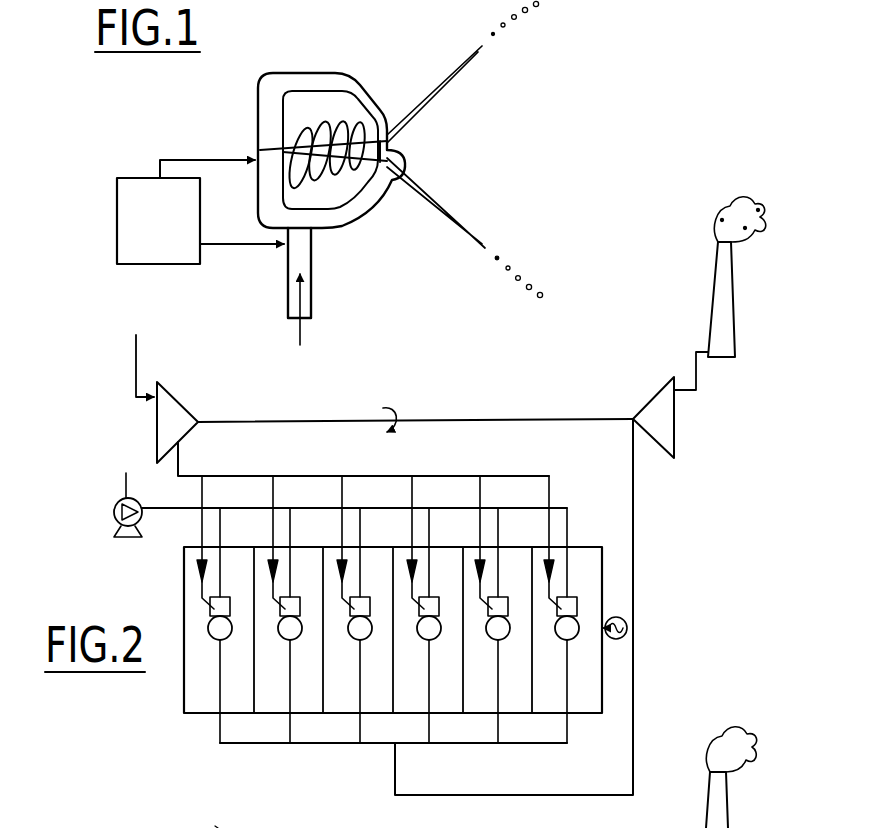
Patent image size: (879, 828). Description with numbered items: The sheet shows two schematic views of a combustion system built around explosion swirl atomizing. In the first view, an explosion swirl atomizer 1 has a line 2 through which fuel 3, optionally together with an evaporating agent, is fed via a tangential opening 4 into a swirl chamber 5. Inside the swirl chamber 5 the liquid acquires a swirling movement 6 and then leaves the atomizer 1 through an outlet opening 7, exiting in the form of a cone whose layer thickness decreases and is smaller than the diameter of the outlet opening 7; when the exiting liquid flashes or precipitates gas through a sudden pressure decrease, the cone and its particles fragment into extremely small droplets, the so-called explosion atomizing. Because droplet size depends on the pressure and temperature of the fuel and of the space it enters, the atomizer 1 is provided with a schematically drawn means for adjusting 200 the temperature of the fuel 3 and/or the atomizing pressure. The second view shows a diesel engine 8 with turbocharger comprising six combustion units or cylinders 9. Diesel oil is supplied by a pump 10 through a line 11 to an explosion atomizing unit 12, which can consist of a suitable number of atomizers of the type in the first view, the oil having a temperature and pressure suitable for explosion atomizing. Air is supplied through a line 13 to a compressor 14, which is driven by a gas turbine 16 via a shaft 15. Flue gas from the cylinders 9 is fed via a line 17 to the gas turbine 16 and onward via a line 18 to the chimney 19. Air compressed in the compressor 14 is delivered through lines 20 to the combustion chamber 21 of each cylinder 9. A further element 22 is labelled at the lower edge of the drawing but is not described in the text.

In FIG. 1, the explosion swirl atomizer 1 is at (253, 77).
In FIG. 1, the line 2 is at (313, 289).
In FIG. 1, the fuel 3 is at (290, 297).
In FIG. 1, the tangential opening 4 is at (296, 176).
In FIG. 1, the swirl chamber 5 is at (272, 118).
In FIG. 1, the swirling movement 6 is at (322, 122).
In FIG. 1, the outlet opening 7 is at (396, 180).
In FIG. 1, the means for adjusting 200 is at (145, 212).
In FIG. 2, the diesel engine 8 is at (472, 404).
In FIG. 2, the cylinders 9 is at (342, 704).
In FIG. 2, the pump 10 is at (118, 510).
In FIG. 2, the line 11 is at (170, 510).
In FIG. 2, the explosion atomizing unit 12 is at (292, 606).
In FIG. 2, the line 13 is at (136, 356).
In FIG. 2, the compressor 14 is at (167, 418).
In FIG. 2, the shaft 15 is at (523, 420).
In FIG. 2, the gas turbine 16 is at (670, 418).
In FIG. 2, the line 17 is at (395, 782).
In FIG. 2, the line 18 is at (698, 366).
In FIG. 2, the chimney 19 is at (722, 308).
In FIG. 2, the lines 20 is at (342, 492).
In FIG. 2, the combustion chamber 21 is at (232, 636).
In FIG. 2, the second engine unit 22 is at (218, 827).